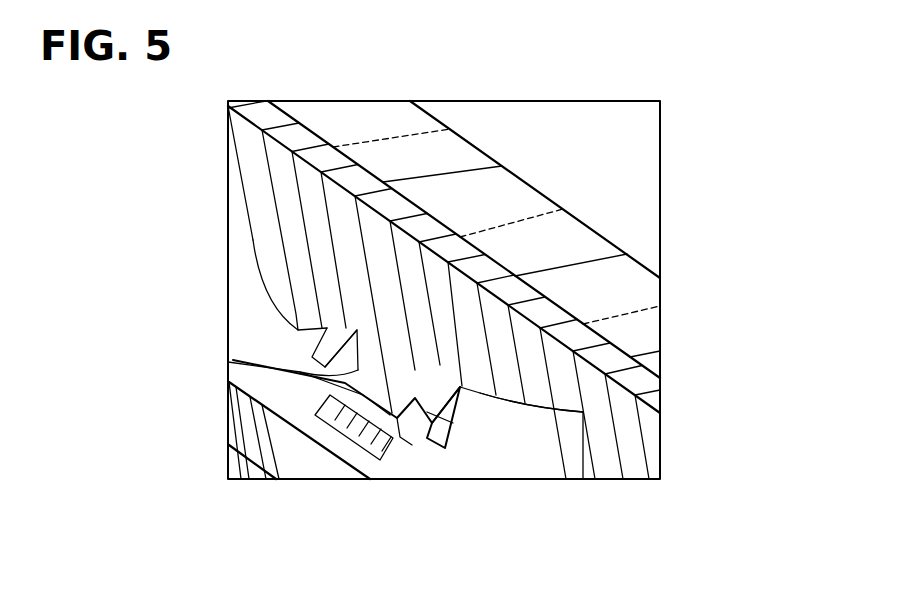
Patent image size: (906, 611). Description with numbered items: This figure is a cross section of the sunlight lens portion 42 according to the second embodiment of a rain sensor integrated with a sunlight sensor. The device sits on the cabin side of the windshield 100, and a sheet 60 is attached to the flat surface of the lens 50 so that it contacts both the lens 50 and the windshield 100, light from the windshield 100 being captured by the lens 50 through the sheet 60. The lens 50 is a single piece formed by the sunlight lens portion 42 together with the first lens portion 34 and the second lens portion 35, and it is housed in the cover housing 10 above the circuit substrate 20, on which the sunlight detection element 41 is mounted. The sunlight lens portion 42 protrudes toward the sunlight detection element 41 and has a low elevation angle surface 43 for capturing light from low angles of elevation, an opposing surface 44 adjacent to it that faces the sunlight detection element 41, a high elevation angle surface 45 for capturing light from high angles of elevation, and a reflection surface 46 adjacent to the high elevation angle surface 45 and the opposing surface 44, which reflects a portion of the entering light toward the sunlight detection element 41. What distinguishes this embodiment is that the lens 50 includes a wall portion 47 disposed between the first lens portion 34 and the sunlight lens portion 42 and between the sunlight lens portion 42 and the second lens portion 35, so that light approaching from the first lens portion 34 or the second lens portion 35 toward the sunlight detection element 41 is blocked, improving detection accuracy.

The windshield 100 is at (573, 240).
The sheet 60 is at (648, 387).
The lens 50 is at (262, 196).
The second lens portion 35 is at (258, 293).
The wall portion 47 is at (316, 345).
The high elevation angle surface 45 is at (340, 365).
The reflection surface 46 is at (340, 383).
The sunlight lens portion 42 is at (462, 423).
The low elevation angle surface 43 is at (425, 442).
The opposing surface 44 is at (400, 437).
The first lens portion 34 is at (562, 418).
The cover housing 10 is at (236, 464).
The sunlight detection element 41 is at (283, 438).
The circuit substrate 20 is at (345, 452).